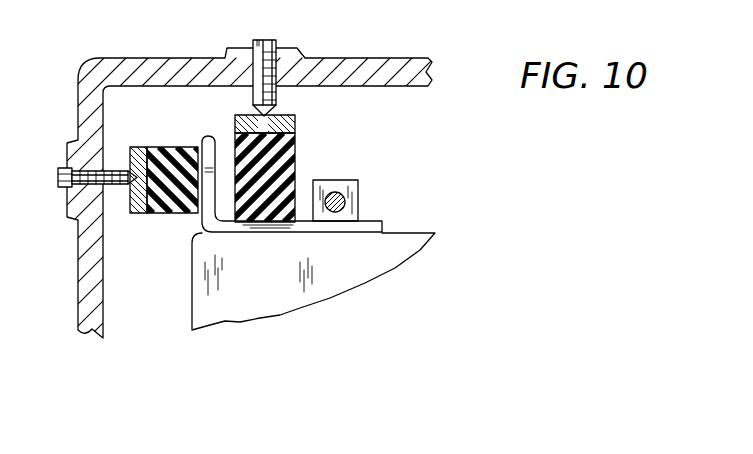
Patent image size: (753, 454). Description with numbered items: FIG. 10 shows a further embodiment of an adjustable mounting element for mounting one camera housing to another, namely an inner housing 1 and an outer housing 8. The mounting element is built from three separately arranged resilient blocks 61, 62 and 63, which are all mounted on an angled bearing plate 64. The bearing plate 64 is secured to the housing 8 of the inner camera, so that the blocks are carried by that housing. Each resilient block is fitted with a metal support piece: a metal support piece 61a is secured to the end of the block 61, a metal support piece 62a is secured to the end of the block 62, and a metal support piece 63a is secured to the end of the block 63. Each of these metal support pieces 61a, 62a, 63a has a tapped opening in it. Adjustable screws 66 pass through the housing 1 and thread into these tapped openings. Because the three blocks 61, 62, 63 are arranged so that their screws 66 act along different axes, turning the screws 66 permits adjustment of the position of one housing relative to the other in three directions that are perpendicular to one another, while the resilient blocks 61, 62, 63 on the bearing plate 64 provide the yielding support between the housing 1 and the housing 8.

The outer housing 1 is at (365, 68).
The outer housing 8 is at (198, 308).
The resilient block 61 is at (234, 140).
The metal support piece 61a is at (235, 113).
The resilient block 62 is at (172, 200).
The metal support piece 62a is at (136, 214).
The resilient block 63 is at (342, 213).
The metal support piece 63a is at (342, 213).
The angled bearing plate 64 is at (252, 233).
The adjustable screw 66 is at (278, 42).